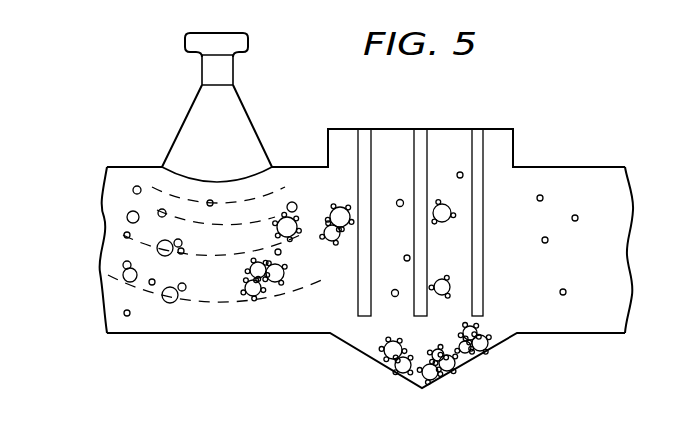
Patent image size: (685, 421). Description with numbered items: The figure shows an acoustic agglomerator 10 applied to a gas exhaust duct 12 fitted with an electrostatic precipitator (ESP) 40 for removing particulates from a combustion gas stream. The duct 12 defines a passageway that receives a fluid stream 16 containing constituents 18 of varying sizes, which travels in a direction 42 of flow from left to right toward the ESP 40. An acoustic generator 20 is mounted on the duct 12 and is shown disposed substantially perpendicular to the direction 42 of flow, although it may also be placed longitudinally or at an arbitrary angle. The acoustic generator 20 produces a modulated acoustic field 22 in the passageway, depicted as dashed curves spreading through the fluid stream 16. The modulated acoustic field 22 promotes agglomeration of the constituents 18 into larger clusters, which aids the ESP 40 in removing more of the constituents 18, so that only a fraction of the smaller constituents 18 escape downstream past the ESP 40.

The acoustic agglomerator 10 is at (569, 105).
The duct 12 is at (218, 334).
The fluid stream 16 is at (113, 200).
The constituents 18 is at (118, 278).
The acoustic generator 20 is at (202, 71).
The modulated acoustic field 22 is at (298, 287).
The electrostatic precipitator 40 is at (447, 129).
The direction of flow 42 is at (672, 247).